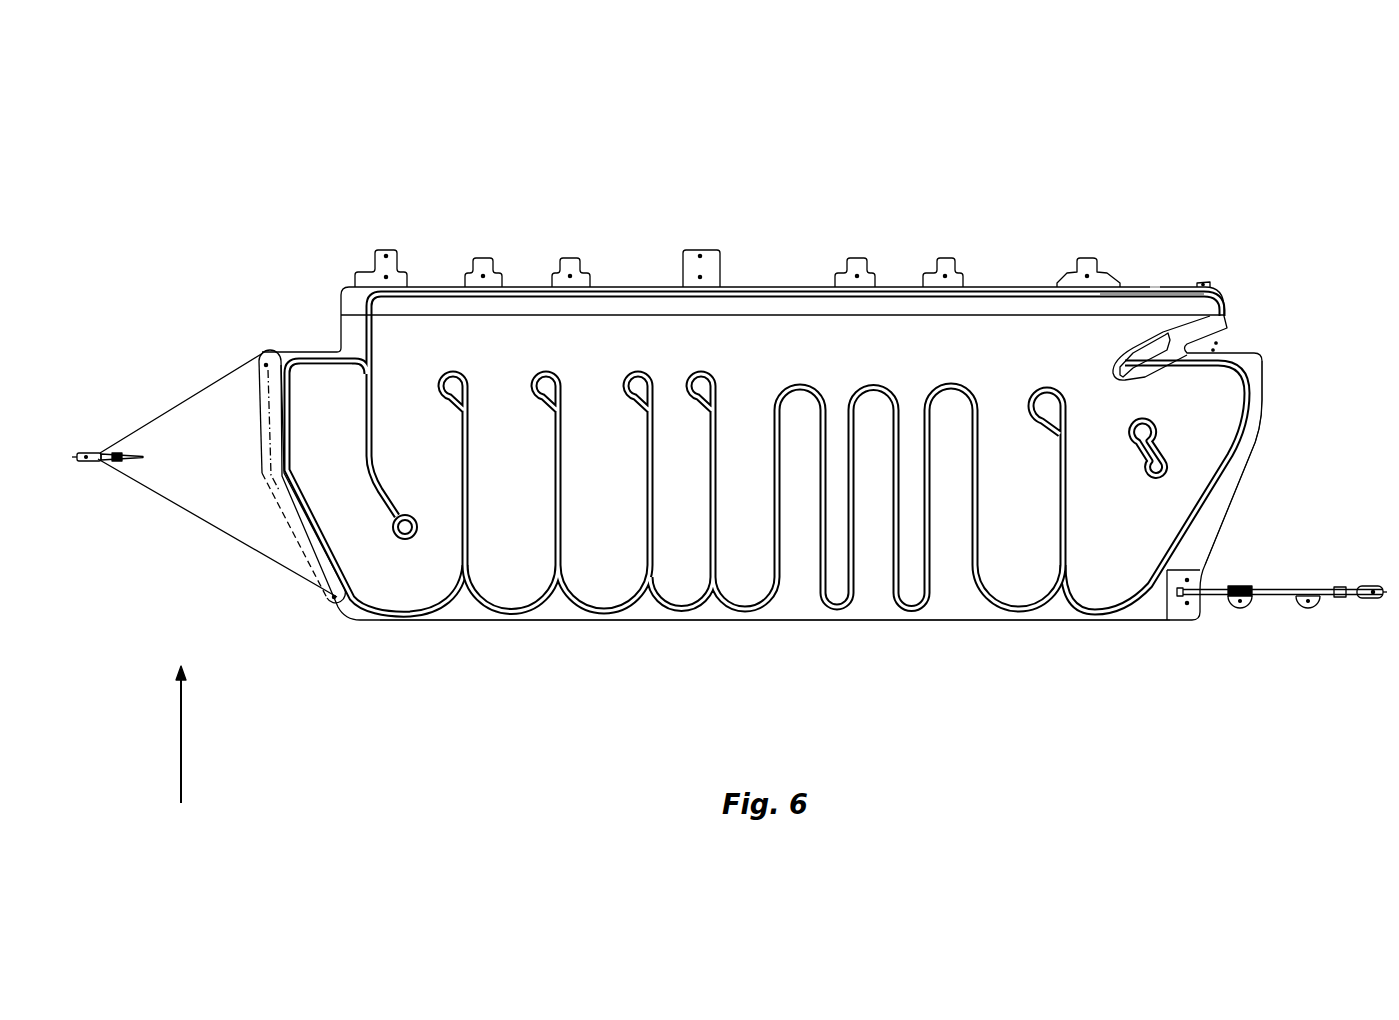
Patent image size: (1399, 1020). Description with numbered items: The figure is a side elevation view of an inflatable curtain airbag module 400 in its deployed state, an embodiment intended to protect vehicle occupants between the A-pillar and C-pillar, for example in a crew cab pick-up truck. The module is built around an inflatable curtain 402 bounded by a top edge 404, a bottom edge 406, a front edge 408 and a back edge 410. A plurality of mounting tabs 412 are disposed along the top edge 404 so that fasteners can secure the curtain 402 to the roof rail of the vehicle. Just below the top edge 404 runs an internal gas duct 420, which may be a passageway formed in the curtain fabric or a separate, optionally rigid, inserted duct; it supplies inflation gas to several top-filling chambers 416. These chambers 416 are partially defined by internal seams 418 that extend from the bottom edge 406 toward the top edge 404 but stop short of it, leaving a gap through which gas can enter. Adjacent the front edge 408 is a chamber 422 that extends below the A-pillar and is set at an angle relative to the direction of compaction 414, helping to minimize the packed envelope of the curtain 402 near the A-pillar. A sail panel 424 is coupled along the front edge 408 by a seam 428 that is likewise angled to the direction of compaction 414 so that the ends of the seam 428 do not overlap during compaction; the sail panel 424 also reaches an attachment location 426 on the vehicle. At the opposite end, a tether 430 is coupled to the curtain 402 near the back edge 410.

The inflatable curtain airbag module 400 is at (1175, 188).
The inflatable curtain 402 is at (363, 632).
The top edge 404 is at (757, 283).
The bottom edge 406 is at (663, 622).
The front edge 408 is at (283, 522).
The back edge 410 is at (1227, 515).
The mounting tabs 412 is at (683, 257).
The direction of compaction 414 is at (183, 737).
The top-filling chambers 416 is at (1110, 403).
The internal seams 418 is at (368, 455).
The internal gas duct 420 is at (1163, 303).
The chamber 422 is at (333, 408).
The sail panel 424 is at (213, 508).
The attachment location 426 is at (90, 462).
The seam 428 is at (263, 407).
The tether 430 is at (1292, 597).